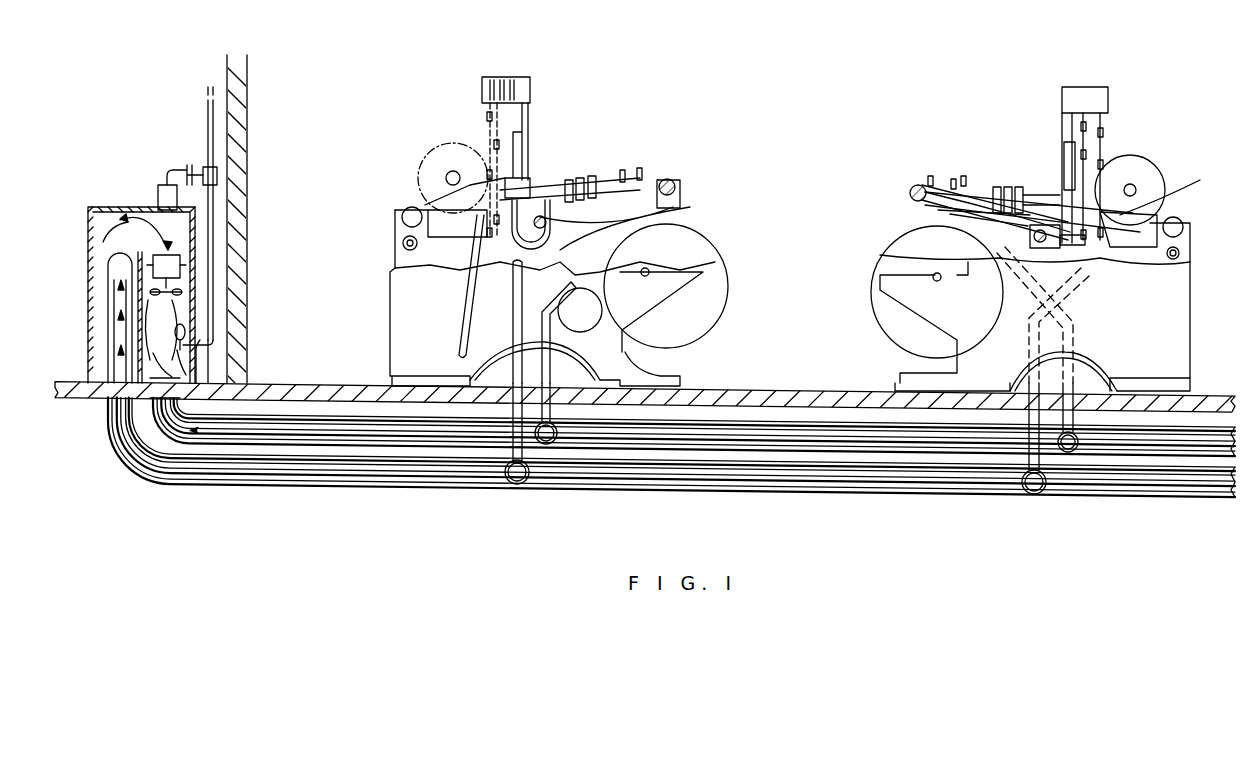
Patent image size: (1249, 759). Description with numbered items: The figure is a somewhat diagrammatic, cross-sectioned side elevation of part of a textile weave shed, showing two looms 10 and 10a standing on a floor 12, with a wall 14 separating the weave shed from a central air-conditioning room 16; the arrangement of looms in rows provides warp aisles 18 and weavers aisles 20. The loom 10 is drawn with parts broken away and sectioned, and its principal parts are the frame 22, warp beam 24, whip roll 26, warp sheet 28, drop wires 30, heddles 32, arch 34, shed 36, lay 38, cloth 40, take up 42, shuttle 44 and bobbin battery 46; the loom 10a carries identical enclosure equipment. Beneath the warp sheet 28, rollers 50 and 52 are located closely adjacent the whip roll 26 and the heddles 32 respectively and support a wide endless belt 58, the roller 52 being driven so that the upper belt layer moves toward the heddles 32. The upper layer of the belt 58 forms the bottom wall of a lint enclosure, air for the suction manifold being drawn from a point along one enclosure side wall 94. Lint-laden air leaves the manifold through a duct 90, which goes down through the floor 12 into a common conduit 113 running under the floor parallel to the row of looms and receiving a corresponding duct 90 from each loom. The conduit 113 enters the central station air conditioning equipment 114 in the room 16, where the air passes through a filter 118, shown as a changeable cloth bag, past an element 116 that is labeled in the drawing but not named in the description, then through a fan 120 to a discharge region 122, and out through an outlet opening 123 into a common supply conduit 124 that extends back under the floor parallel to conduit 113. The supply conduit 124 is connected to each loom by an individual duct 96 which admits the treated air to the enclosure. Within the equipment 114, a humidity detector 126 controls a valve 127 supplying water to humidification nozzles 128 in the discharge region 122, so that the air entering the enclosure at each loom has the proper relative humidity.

The loom 10 is at (1032, 239).
The loom 10a is at (763, 231).
The floor 12 is at (752, 398).
The wall 14 is at (237, 270).
The central air-conditioning room 16 is at (172, 120).
The warp aisle 18 is at (792, 288).
The weavers aisle 20 is at (341, 256).
The frame 22 is at (444, 311).
The warp beam 24 is at (882, 332).
The whip roll 26 is at (917, 188).
The warp sheet 28 is at (950, 188).
The drop wires 30 is at (1008, 190).
The heddles 32 is at (1100, 148).
The arch 34 is at (1066, 100).
The shed 36 is at (1150, 205).
The lay 38 is at (1182, 222).
The cloth 40 is at (1120, 215).
The take up 42 is at (1178, 232).
The shuttle 44 is at (1105, 215).
The bobbin battery 46 is at (1148, 163).
The roller 50 is at (932, 178).
The roller 52 is at (1070, 192).
The endless belt 58 is at (973, 205).
The duct 90 is at (510, 296).
The side wall 94 is at (527, 192).
The duct 96 is at (553, 342).
The common conduit 113 is at (440, 513).
The central station air conditioning equipment 114 is at (103, 200).
The fan 116 is at (187, 243).
The filter 118 is at (123, 282).
The fan 120 is at (214, 225).
The discharge region 122 is at (187, 360).
The outlet opening 123 is at (210, 380).
The common supply conduit 124 is at (352, 428).
The humidity detector 126 is at (165, 190).
The valve 127 is at (212, 176).
The humidification nozzles 128 is at (195, 338).